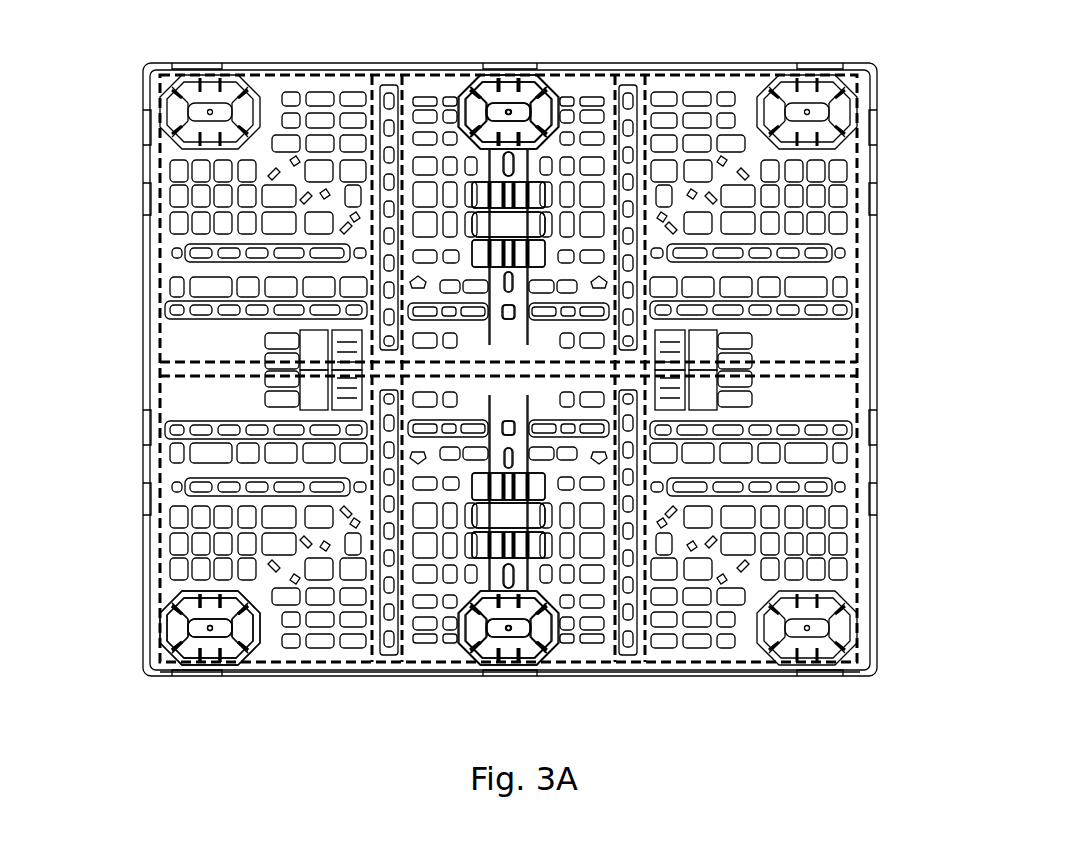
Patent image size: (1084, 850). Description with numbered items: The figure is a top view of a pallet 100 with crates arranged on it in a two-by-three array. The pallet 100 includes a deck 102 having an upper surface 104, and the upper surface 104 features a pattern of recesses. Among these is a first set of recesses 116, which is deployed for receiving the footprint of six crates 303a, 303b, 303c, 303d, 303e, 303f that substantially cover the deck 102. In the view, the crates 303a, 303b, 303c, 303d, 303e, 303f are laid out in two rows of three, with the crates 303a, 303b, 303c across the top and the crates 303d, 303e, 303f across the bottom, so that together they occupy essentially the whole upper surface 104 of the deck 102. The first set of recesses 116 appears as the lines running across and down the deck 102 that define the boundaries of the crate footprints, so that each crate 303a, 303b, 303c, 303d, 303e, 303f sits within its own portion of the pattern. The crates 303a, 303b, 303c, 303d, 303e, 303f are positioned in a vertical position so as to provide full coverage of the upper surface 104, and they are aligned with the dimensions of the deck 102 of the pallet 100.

The pallet 100 is at (102, 208).
The deck 102 is at (770, 684).
The upper surface 104 is at (182, 663).
The first set of recesses 116 is at (385, 128).
The crate 303a is at (223, 277).
The crate 303b is at (450, 108).
The crate 303c is at (785, 278).
The crate 303d is at (312, 638).
The crate 303e is at (483, 638).
The crate 303f is at (790, 502).